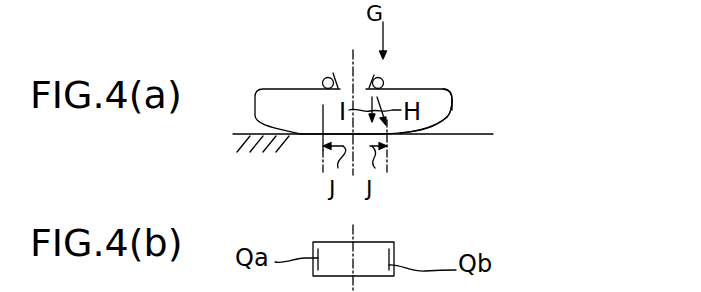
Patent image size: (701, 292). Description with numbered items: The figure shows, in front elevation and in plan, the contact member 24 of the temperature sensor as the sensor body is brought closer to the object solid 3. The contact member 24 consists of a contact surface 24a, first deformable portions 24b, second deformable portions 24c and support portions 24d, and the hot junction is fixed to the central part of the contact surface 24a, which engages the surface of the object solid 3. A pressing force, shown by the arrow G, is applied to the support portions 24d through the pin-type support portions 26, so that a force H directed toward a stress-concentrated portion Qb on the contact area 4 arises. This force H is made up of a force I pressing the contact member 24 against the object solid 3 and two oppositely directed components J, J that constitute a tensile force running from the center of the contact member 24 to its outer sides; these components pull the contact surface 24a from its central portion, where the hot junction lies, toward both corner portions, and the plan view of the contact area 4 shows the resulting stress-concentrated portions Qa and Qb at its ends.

In FIG. 4A, the contact member 24 is at (280, 85).
In FIG. 4A, the contact surface 24a is at (437, 125).
In FIG. 4A, the first deformable portions 24b is at (453, 104).
In FIG. 4A, the second deformable portions 24c is at (444, 88).
In FIG. 4A, the support portions 24d is at (375, 74).
In FIG. 4A, the pin-type support portions 26 is at (385, 81).
In FIG. 4A, the object solid 3 is at (478, 131).
In FIG. 4B, the contact area 4 is at (395, 243).